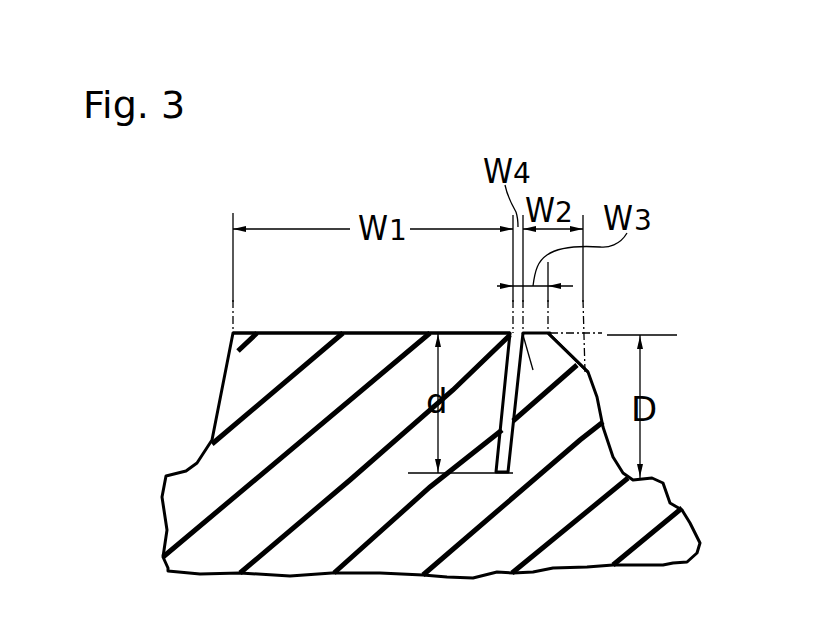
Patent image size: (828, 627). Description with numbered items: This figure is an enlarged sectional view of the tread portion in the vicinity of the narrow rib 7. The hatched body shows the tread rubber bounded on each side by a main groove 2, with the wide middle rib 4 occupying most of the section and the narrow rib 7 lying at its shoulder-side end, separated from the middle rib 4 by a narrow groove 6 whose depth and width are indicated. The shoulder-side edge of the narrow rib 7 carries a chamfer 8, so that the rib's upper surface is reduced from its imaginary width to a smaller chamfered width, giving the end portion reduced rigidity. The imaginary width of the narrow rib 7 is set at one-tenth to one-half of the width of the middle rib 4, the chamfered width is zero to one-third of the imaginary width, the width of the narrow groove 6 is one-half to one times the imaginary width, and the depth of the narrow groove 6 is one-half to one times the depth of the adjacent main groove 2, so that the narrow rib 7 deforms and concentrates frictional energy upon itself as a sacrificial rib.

The main groove 2 is at (187, 467).
The middle rib 4 is at (285, 340).
The narrow groove 6 is at (505, 400).
The narrow rib 7 is at (512, 333).
The chamfer 8 is at (568, 353).